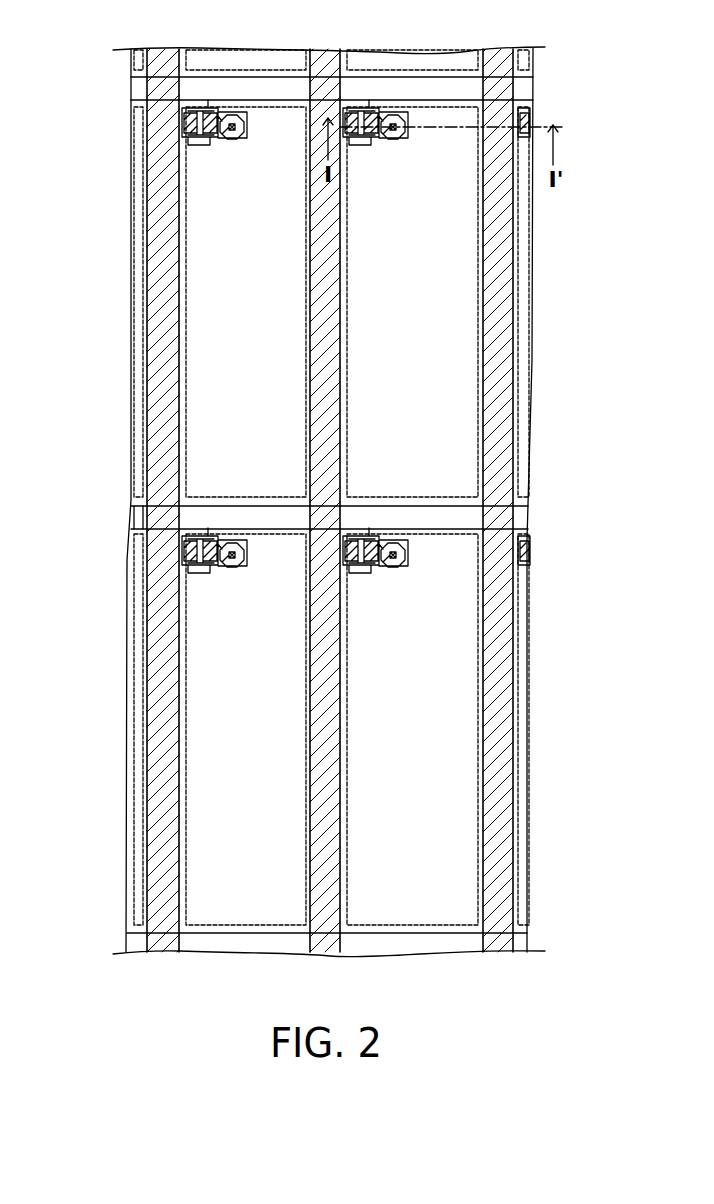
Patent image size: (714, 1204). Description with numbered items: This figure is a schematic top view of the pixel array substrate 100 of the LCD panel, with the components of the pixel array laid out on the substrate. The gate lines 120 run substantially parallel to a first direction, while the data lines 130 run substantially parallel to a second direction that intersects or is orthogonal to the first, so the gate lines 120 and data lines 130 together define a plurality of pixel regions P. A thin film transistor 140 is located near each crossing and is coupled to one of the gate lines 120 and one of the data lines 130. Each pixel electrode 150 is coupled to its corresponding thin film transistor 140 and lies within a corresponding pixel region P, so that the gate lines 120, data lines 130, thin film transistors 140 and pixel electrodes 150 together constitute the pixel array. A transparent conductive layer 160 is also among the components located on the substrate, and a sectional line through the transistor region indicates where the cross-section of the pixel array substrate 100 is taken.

The pixel array substrate 100 is at (549, 1014).
The gate lines 120 is at (438, 94).
The data lines 130 is at (333, 52).
The thin film transistors 140 is at (387, 105).
The pixel electrodes 150 is at (187, 305).
The transparent conductive layer 160 is at (135, 531).
The pixel regions P is at (226, 384).